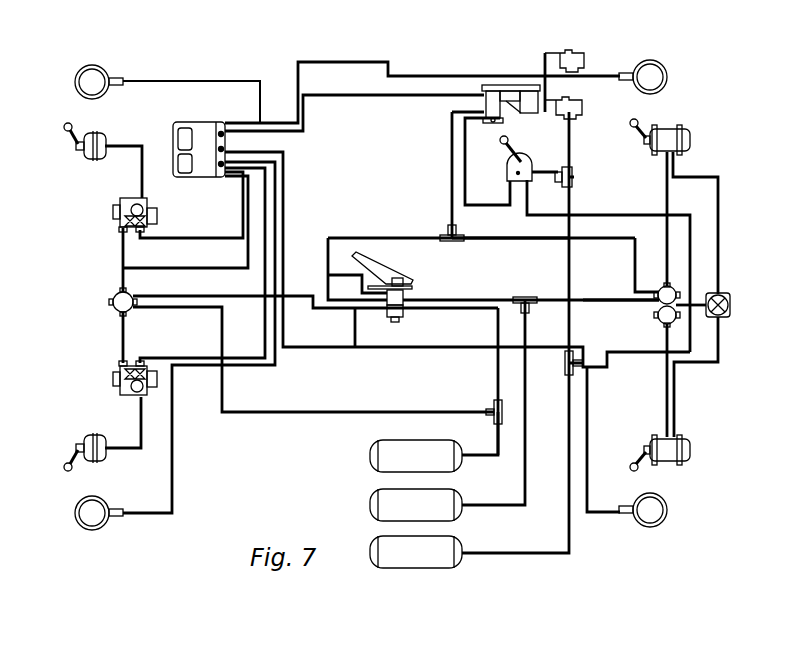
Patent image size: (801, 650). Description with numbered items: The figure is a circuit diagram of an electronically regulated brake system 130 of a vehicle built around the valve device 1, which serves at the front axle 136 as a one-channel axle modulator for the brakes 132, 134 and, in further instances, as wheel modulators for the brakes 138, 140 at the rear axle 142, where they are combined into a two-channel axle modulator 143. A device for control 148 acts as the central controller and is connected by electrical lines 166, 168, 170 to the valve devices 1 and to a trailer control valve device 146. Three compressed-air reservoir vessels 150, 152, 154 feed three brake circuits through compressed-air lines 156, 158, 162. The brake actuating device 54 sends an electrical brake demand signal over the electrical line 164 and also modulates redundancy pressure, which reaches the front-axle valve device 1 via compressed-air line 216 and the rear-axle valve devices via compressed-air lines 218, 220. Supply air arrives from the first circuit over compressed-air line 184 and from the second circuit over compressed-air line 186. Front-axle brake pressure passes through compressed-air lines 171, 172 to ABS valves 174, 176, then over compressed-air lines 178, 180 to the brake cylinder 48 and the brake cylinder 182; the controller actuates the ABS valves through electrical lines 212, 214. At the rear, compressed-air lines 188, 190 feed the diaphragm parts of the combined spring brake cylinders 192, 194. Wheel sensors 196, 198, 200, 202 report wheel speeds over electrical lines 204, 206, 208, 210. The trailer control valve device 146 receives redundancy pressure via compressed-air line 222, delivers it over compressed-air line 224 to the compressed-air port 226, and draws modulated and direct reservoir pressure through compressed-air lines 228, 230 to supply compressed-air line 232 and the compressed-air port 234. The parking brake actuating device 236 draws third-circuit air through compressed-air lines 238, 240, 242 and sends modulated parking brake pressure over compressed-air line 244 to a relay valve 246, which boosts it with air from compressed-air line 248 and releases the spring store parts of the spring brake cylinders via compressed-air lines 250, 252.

The valve device 1 is at (111, 300).
The brake cylinder 48 is at (86, 158).
The brake actuating device 54 is at (412, 266).
The brake system 130 is at (394, 33).
The brake 132 is at (62, 109).
The brake 134 is at (64, 495).
The front axle 136 is at (85, 37).
The brake 138 is at (687, 102).
The brake 140 is at (686, 488).
The rear axle 142 is at (664, 36).
The 2-channel axle modulator 143 is at (684, 285).
The trailer control valve device 146 is at (504, 124).
The device for control 148 is at (199, 178).
The compressed-air reservoir vessel 150 is at (416, 456).
The compressed-air reservoir vessel 152 is at (416, 505).
The compressed-air reservoir vessel 154 is at (416, 552).
The compressed-air line 156 is at (496, 436).
The compressed-air line 158 is at (496, 384).
The compressed-air line 162 is at (492, 300).
The electrical line 164 is at (341, 270).
The electrical line 166 is at (210, 270).
The electrical line 168 is at (434, 310).
The electrical line 170 is at (340, 94).
The compressed-air line 171 is at (119, 264).
The compressed-air line 172 is at (119, 346).
The ABS valve 174 is at (116, 213).
The ABS valve 176 is at (116, 382).
The compressed-air line 178 is at (140, 176).
The compressed-air line 180 is at (137, 420).
The brake cylinder 182 is at (87, 436).
The compressed-air line 184 is at (300, 410).
The compressed-air line 186 is at (596, 302).
The compressed-air line 188 is at (670, 192).
The compressed-air line 190 is at (664, 410).
The combined spring brake cylinder 192 is at (692, 143).
The combined spring brake cylinder 194 is at (692, 453).
The wheel sensor 196 is at (100, 67).
The wheel sensor 198 is at (102, 498).
The wheel sensor 200 is at (668, 70).
The wheel sensor 202 is at (666, 523).
The electrical line 204 is at (184, 78).
The electrical line 206 is at (152, 515).
The electrical line 208 is at (454, 72).
The electrical line 210 is at (592, 513).
The electrical line 212 is at (200, 236).
The electrical line 214 is at (190, 357).
The compressed-air line 216 is at (353, 348).
The compressed-air line 218 is at (408, 237).
The compressed-air line 220 is at (496, 237).
The compressed-air line 222 is at (450, 188).
The compressed-air line 224 is at (540, 74).
The compressed-air port 226 is at (580, 54).
The compressed-air line 228 is at (465, 169).
The compressed-air line 230 is at (572, 153).
The compressed-air line 232 is at (556, 117).
The compressed-air port 234 is at (580, 116).
The parking brake actuating device 236 is at (530, 160).
The compressed-air line 238 is at (560, 187).
The compressed-air line 240 is at (562, 275).
The compressed-air line 242 is at (566, 537).
The compressed-air line 244 is at (614, 214).
The relay valve 246 is at (731, 298).
The compressed-air line 248 is at (623, 358).
The compressed-air line 250 is at (720, 222).
The compressed-air line 252 is at (678, 388).